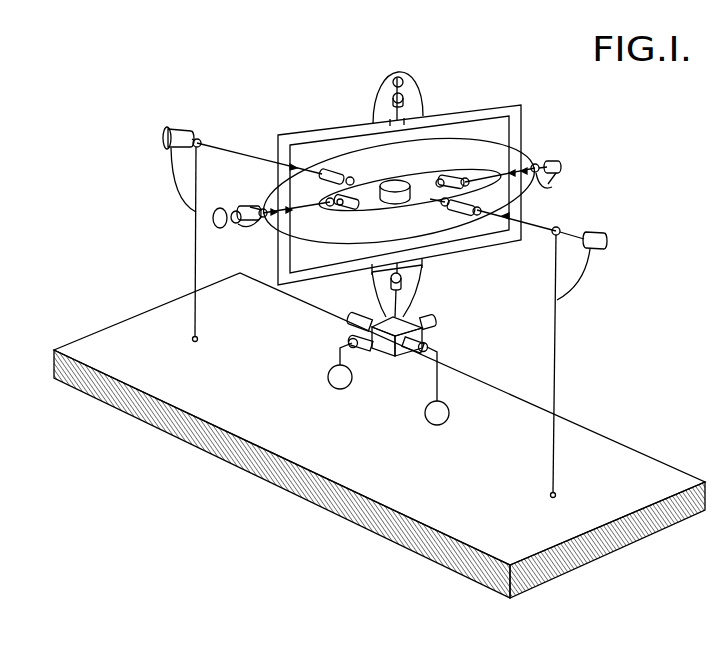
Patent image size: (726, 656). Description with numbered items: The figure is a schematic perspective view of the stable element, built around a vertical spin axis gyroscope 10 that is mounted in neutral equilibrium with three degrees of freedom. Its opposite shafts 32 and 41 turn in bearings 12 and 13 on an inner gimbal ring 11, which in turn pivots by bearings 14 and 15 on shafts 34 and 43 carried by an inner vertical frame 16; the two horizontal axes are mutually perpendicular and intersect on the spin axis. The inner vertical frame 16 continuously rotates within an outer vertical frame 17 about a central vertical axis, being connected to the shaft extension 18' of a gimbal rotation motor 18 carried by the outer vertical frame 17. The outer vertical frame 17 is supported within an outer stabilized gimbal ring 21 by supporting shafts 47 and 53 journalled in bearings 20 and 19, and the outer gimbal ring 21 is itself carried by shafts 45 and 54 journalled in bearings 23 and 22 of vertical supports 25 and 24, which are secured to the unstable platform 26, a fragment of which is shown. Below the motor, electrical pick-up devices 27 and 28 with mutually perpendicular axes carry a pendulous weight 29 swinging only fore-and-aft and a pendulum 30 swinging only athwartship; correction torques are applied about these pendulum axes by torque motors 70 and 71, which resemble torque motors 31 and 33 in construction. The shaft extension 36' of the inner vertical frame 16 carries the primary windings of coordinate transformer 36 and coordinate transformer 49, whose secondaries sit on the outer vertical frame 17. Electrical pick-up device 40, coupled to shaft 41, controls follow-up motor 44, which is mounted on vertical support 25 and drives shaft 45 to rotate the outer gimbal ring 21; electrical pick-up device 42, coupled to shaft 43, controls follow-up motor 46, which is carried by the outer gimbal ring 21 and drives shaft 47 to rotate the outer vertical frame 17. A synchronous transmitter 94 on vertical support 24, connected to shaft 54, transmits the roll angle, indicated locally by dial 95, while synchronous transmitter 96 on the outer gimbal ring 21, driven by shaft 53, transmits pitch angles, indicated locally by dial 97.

The vertical spin axis gyroscope 10 is at (393, 181).
The inner gimbal ring 11 is at (418, 174).
The bearing 12 is at (351, 177).
The bearing 13 is at (444, 206).
The bearing 14 is at (330, 206).
The bearing 15 is at (467, 179).
The inner vertical frame 16 is at (508, 133).
The outer vertical frame 17 is at (522, 124).
The gimbal rotation motor 18 is at (394, 290).
The shaft extension 18' is at (408, 291).
The bearing 19 is at (262, 219).
The bearing 20 is at (541, 166).
The outer stabilized gimbal ring 21 is at (330, 240).
The bearing 22 is at (202, 141).
The bearing 23 is at (559, 228).
The vertical support 24 is at (194, 251).
The vertical support 25 is at (556, 359).
The unstable platform 26 is at (632, 454).
The electrical pick-up device 27 is at (361, 348).
The electrical pick-up device 28 is at (428, 345).
The pendulous weight 29 is at (330, 383).
The pendulum 30 is at (427, 407).
The torque motor 31 is at (330, 171).
The shaft 32 is at (357, 198).
The torque motor 33 is at (343, 207).
The shaft 34 is at (305, 207).
The coordinate transformer 36 is at (382, 96).
The shaft extension 36' is at (386, 98).
The electrical pick-up device 40 is at (478, 214).
The supporting shaft 41 is at (418, 197).
The electrical pick-up device 42 is at (441, 179).
The shaft 43 is at (500, 182).
The follow-up motor 44 is at (609, 240).
The supporting shaft 45 is at (545, 218).
The follow-up motor 46 is at (564, 167).
The supporting shaft 47 is at (543, 181).
The coordinate transformer 49 is at (398, 77).
The supporting shaft 53 is at (249, 206).
The shaft 54 is at (248, 154).
The torque motor 70 is at (428, 317).
The torque motor 71 is at (360, 317).
The synchronous transmitter 94 is at (183, 132).
The dial 95 is at (166, 127).
The synchronous transmitter 96 is at (237, 225).
The dial 97 is at (220, 208).